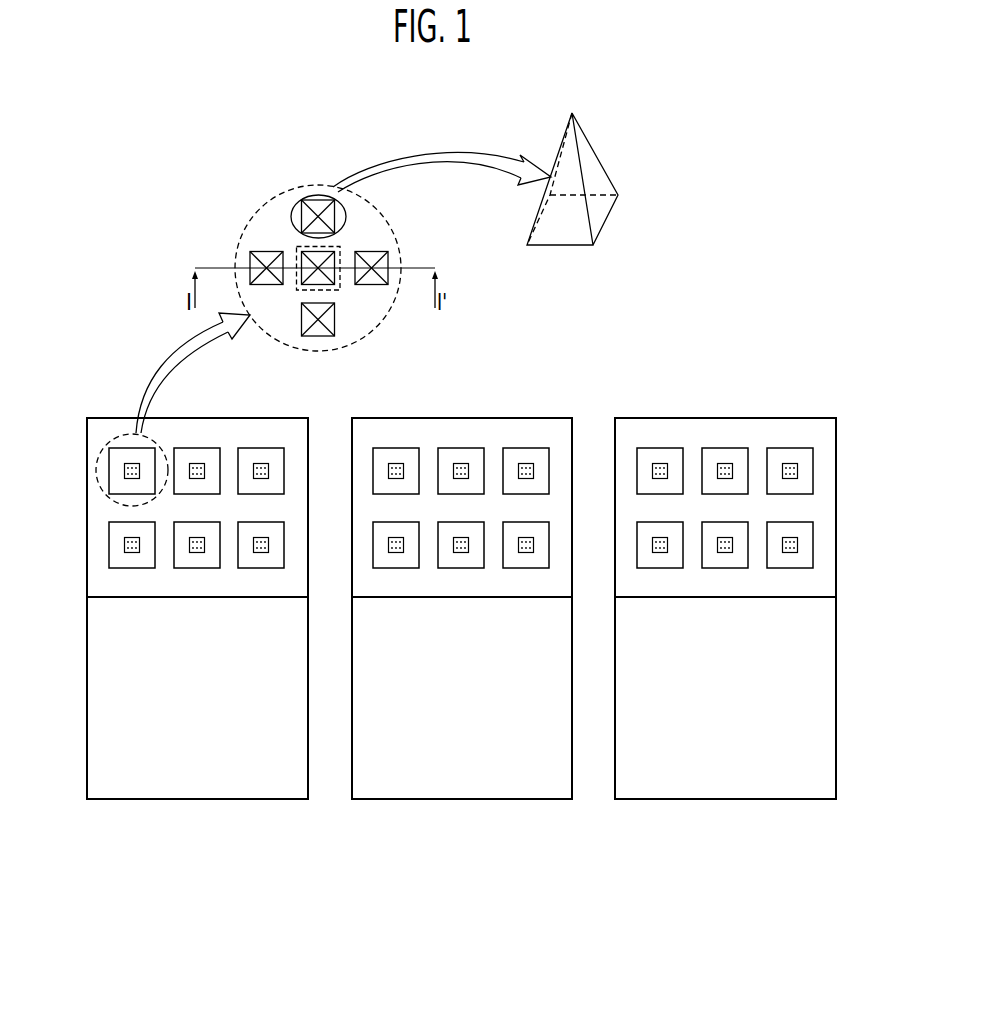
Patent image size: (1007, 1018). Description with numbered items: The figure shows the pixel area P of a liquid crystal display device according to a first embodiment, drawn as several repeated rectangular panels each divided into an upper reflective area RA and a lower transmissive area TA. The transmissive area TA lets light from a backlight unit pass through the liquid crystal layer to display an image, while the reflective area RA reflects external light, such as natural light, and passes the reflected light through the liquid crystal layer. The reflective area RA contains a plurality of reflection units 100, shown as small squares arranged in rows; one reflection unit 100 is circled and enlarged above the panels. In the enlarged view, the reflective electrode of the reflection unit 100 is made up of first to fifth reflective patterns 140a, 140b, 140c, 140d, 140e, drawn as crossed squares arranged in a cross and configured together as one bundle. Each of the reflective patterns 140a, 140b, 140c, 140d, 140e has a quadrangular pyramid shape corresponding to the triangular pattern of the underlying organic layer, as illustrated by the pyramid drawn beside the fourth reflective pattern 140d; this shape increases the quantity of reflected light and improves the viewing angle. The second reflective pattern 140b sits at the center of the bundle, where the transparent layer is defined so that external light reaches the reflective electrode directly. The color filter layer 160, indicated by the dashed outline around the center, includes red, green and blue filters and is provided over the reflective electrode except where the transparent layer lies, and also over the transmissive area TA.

The reflection unit 100 is at (354, 138).
The first reflective pattern 140a is at (265, 253).
The second reflective pattern 140b is at (335, 253).
The third reflective pattern 140c is at (388, 253).
The fourth reflective pattern 140d is at (308, 197).
The fifth reflective pattern 140e is at (318, 337).
The color filter layer 160 is at (342, 290).
The pixel area P is at (196, 806).
The reflective area RA is at (87, 508).
The transmissive area TA is at (87, 683).